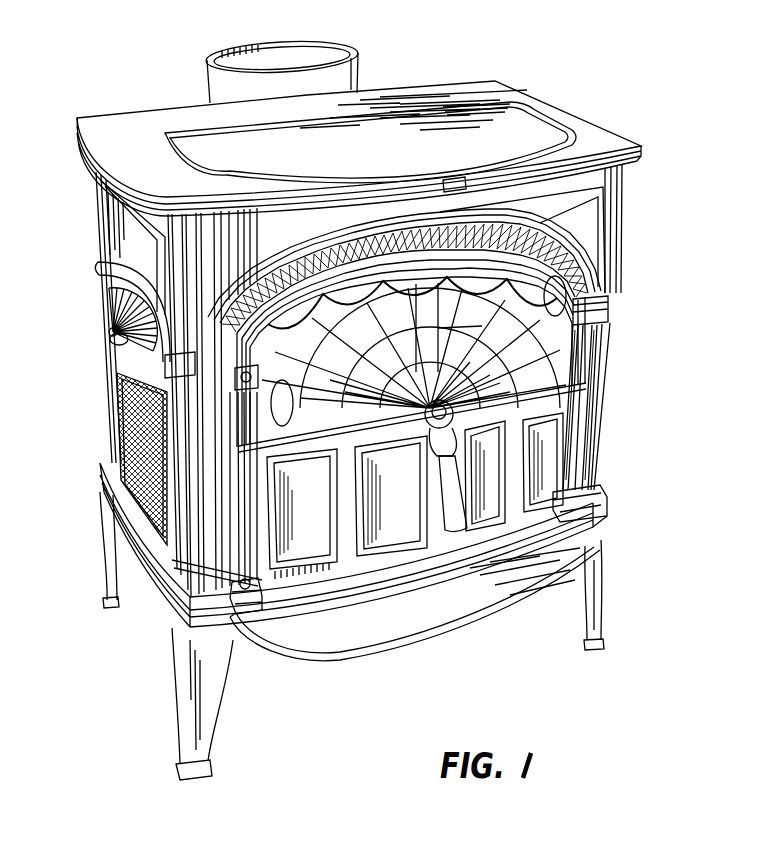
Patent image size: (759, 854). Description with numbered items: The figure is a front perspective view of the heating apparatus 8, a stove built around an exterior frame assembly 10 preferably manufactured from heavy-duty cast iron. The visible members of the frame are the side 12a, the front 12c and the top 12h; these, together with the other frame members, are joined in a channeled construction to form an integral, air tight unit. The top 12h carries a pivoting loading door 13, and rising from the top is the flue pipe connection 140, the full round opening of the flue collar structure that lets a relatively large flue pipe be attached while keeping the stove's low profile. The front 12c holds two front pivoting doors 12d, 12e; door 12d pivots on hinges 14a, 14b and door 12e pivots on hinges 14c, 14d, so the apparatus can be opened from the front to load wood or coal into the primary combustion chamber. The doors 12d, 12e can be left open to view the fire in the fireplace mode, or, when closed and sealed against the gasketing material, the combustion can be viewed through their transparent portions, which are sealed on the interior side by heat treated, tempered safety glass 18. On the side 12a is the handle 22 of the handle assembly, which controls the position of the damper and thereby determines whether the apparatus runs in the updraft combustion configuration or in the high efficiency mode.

The heating apparatus 8 is at (674, 89).
The exterior frame assembly 10 is at (490, 81).
The top 12h is at (145, 141).
The pivoting loading door 13 is at (290, 161).
The flue pipe connection 140 is at (210, 68).
The handle 22 is at (97, 238).
The side 12a is at (138, 352).
The front 12c is at (235, 553).
The hinge 14a is at (258, 375).
The tempered safety glass 18 is at (370, 339).
The front pivoting door 12d is at (320, 488).
The front pivoting door 12e is at (480, 444).
The hinge 14c is at (603, 318).
The hinge 14d is at (600, 500).
The hinge 14b is at (262, 594).